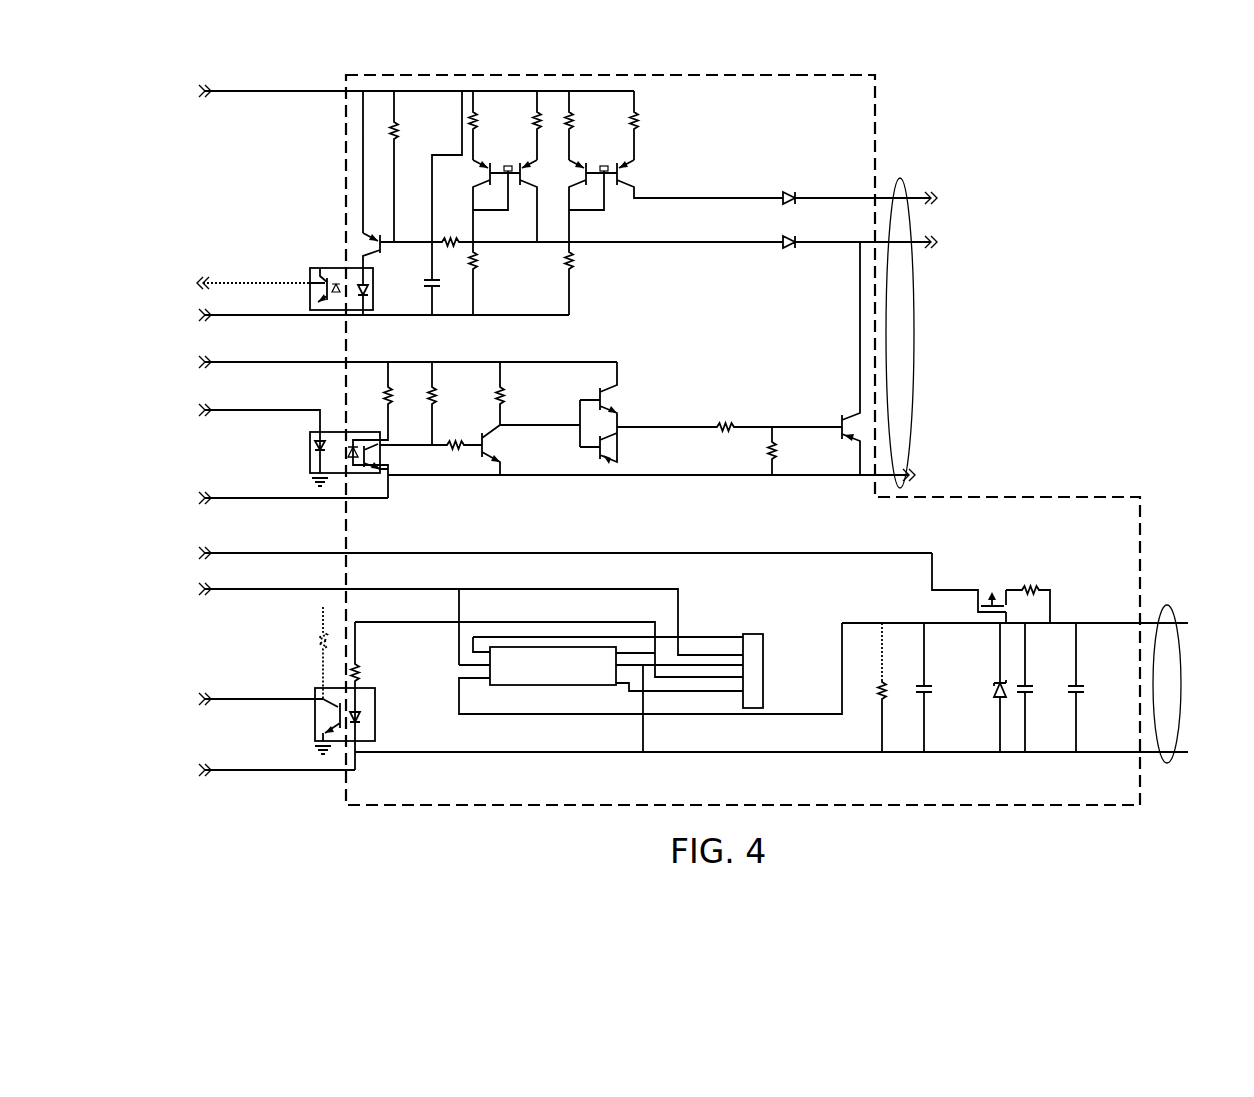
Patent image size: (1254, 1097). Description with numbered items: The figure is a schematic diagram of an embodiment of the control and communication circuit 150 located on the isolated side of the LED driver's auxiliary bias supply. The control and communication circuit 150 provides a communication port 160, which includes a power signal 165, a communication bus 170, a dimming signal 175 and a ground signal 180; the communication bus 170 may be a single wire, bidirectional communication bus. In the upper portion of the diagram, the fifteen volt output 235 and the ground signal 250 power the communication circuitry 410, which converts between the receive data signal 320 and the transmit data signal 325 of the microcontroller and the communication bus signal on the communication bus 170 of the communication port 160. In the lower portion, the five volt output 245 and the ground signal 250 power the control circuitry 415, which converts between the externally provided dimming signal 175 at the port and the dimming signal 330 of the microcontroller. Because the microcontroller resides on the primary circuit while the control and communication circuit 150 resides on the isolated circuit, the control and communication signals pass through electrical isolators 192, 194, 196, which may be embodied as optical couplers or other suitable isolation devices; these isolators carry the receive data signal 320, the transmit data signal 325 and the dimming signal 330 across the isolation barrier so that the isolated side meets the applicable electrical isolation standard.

The control and communication circuit 150 is at (447, 74).
The communication port 160 is at (1167, 605).
The power signal 165 is at (920, 194).
The communication bus 170 is at (935, 251).
The dimming signal 175 is at (1184, 622).
The ground signal 180 is at (1184, 750).
The electrical isolator 192 is at (323, 268).
The electrical isolator 194 is at (337, 432).
The electrical isolator 196 is at (312, 729).
The 15 volt output 235 is at (198, 555).
The 5 volt output 245 is at (198, 590).
The ground signal 250 is at (198, 771).
The receive data signal 320 is at (196, 284).
The transmit data signal 325 is at (198, 411).
The dimming signal 330 is at (198, 700).
The communication circuitry 410 is at (766, 166).
The control circuitry 415 is at (581, 545).